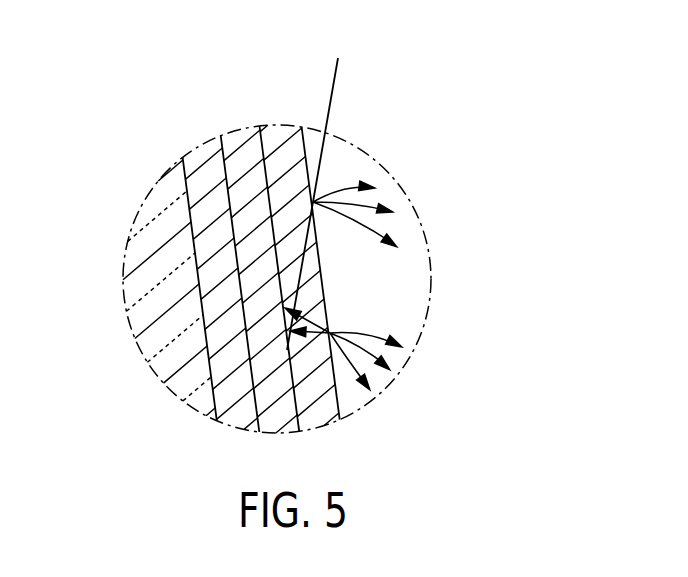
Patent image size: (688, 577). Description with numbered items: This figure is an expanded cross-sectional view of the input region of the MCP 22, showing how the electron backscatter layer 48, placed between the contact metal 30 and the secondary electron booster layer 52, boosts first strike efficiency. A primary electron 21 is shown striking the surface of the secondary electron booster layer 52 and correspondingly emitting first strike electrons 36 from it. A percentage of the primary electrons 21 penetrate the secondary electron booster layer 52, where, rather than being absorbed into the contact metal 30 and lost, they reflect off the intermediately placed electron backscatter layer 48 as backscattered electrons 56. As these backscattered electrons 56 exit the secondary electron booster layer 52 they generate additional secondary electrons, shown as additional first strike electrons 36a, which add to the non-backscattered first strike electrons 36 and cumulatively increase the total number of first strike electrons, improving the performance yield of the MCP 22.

The primary electron 21 is at (331, 93).
The MCP 22 is at (474, 112).
The contact metal 30 is at (200, 258).
The first strike electrons 36 is at (364, 242).
The additional first strike electrons 36a is at (375, 324).
The electron backscatter layer 48 is at (243, 197).
The secondary electron booster layer 52 is at (272, 125).
The backscattered electrons 56 is at (326, 298).